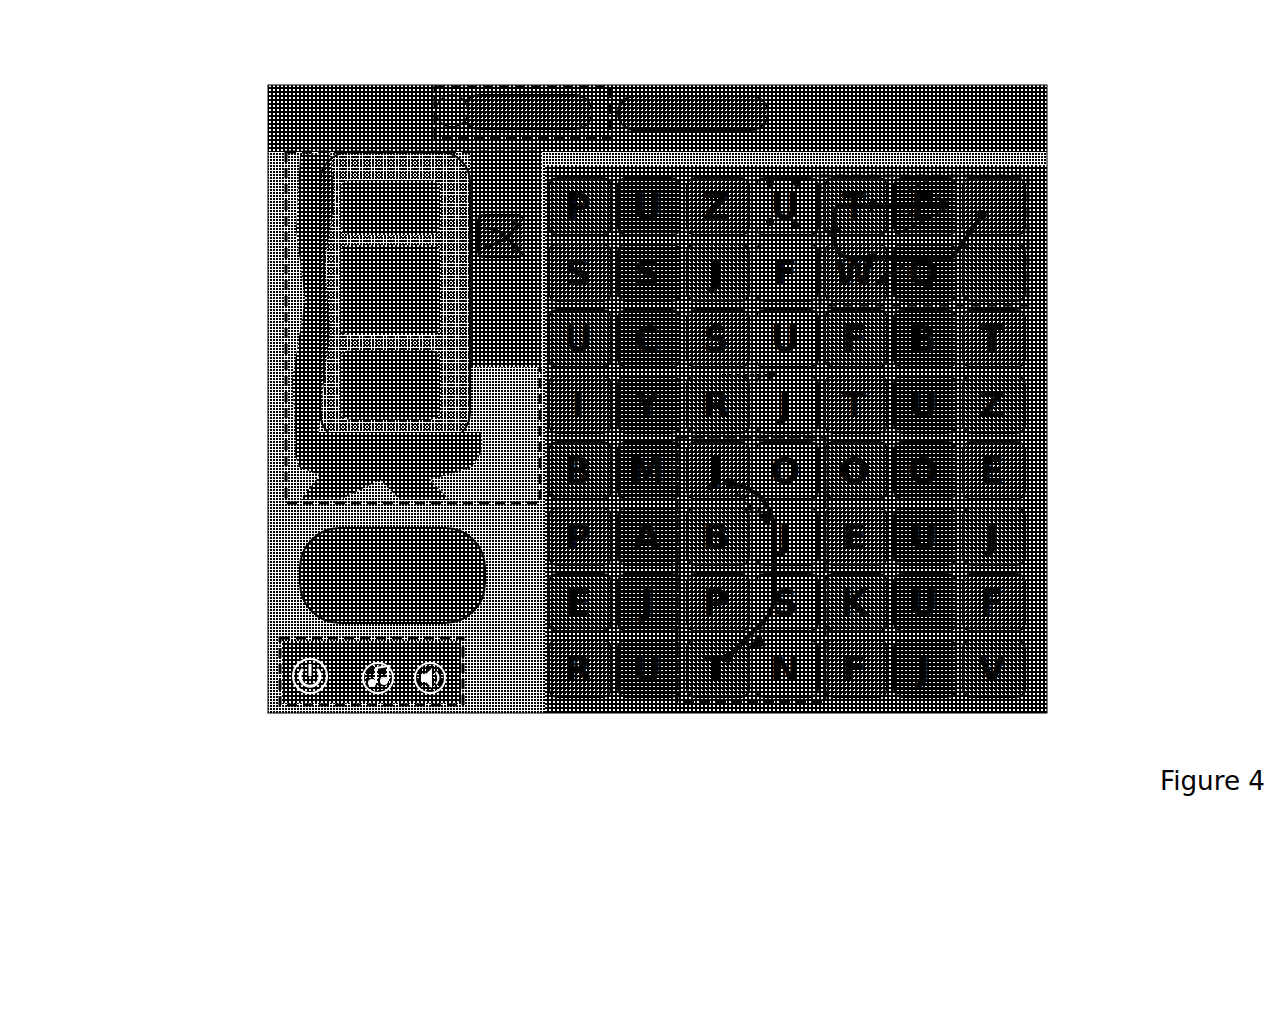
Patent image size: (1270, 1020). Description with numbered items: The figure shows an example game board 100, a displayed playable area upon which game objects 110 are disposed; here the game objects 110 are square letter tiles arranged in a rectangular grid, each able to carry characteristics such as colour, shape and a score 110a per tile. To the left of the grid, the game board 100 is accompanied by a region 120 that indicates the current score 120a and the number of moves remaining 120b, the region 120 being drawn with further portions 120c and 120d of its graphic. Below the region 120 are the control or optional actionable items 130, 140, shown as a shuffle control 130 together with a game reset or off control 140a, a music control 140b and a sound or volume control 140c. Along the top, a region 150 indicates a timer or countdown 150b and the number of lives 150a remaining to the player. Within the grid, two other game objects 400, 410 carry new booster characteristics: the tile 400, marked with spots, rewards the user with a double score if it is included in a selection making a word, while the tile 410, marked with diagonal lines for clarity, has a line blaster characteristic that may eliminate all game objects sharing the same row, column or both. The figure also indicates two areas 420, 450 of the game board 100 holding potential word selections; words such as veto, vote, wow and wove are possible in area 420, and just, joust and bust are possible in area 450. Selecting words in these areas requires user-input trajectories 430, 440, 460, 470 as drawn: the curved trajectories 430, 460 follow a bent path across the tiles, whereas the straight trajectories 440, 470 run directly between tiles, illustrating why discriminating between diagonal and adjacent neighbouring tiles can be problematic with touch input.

The game board 100 is at (868, 713).
The game object 110 is at (1017, 202).
The score 110a is at (1027, 286).
The region indicating current score and moves remaining 120 is at (357, 273).
The current score 120a is at (350, 200).
The number of moves remaining 120b is at (345, 390).
The bag base 120c is at (310, 463).
The swap/shuffle icon 120d is at (503, 217).
The shuffle control 130 is at (300, 568).
The control items 140 is at (310, 712).
The game reset or off control 140a is at (297, 672).
The music control 140b is at (380, 695).
The sound or volume control 140c is at (432, 690).
The region indicating timer and lives 150 is at (520, 79).
The number of lives 150a is at (453, 93).
The timer or countdown 150b is at (578, 90).
The other game object with double-score booster 400 is at (790, 178).
The other game object with line blaster booster 410 is at (925, 178).
The area of potential word selections 420 is at (1015, 178).
The curved trajectory 430 is at (1030, 240).
The straight trajectory 440 is at (900, 270).
The area of potential word selections 450 is at (805, 700).
The curved trajectory 460 is at (748, 700).
The straight trajectory 470 is at (745, 495).